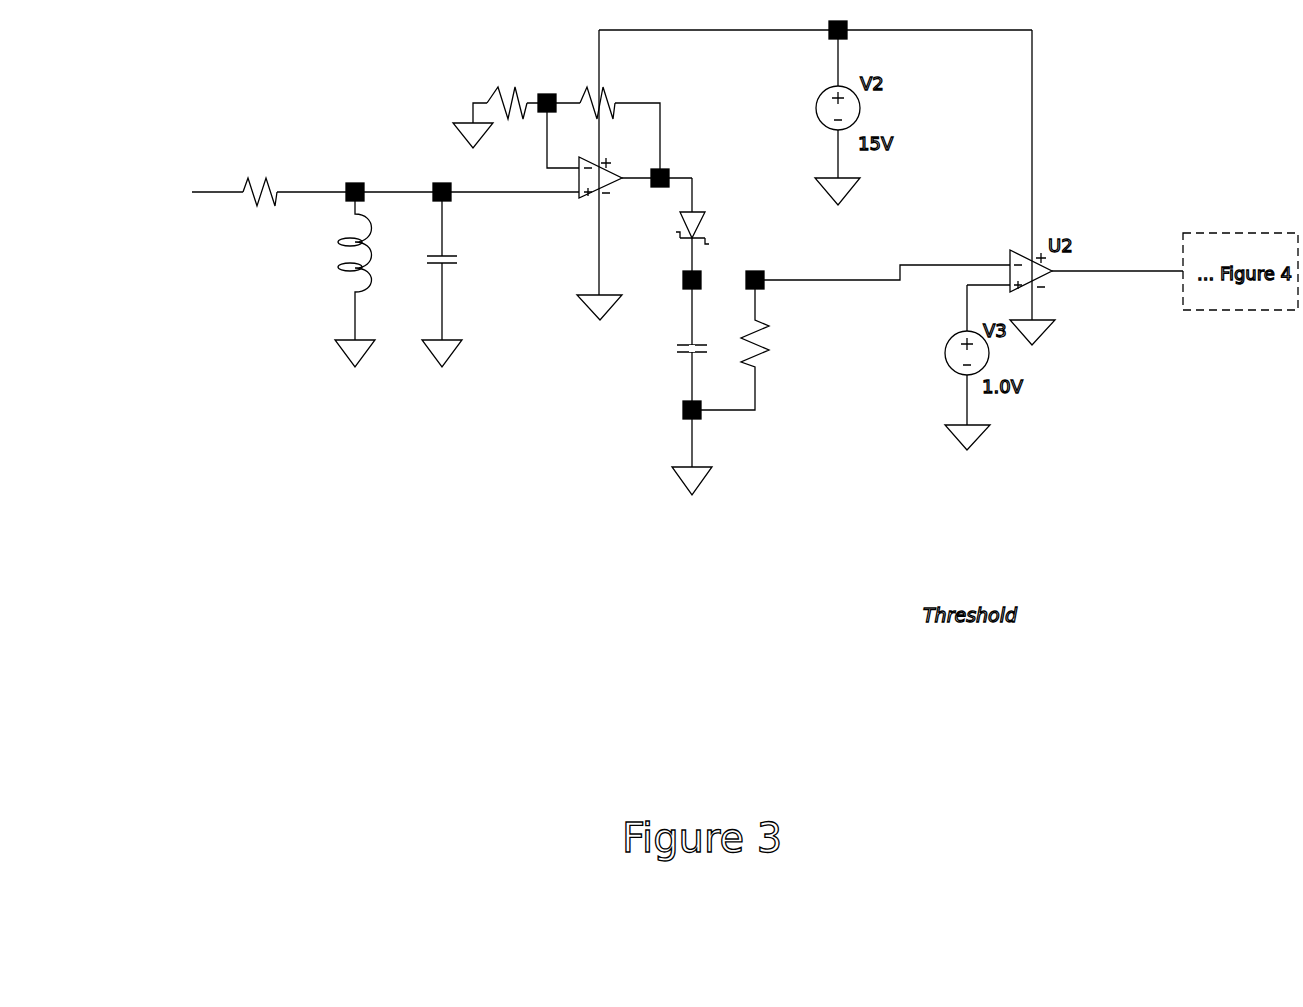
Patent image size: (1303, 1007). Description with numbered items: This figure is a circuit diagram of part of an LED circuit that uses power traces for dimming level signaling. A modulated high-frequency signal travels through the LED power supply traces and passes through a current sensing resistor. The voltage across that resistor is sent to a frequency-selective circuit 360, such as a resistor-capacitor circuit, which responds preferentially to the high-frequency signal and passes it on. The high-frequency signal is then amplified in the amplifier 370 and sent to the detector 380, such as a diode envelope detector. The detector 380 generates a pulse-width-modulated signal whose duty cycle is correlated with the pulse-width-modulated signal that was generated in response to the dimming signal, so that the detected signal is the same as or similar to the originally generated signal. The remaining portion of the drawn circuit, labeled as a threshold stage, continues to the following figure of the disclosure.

The frequency-selective circuit 360 is at (485, 590).
The amplifier 370 is at (630, 592).
The detector 380 is at (760, 597).